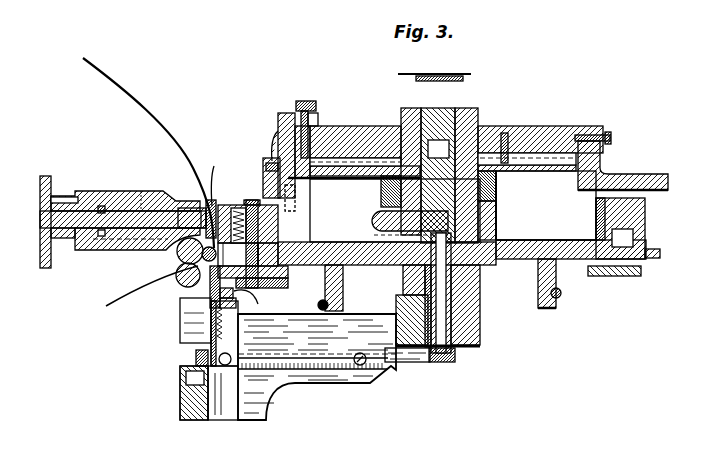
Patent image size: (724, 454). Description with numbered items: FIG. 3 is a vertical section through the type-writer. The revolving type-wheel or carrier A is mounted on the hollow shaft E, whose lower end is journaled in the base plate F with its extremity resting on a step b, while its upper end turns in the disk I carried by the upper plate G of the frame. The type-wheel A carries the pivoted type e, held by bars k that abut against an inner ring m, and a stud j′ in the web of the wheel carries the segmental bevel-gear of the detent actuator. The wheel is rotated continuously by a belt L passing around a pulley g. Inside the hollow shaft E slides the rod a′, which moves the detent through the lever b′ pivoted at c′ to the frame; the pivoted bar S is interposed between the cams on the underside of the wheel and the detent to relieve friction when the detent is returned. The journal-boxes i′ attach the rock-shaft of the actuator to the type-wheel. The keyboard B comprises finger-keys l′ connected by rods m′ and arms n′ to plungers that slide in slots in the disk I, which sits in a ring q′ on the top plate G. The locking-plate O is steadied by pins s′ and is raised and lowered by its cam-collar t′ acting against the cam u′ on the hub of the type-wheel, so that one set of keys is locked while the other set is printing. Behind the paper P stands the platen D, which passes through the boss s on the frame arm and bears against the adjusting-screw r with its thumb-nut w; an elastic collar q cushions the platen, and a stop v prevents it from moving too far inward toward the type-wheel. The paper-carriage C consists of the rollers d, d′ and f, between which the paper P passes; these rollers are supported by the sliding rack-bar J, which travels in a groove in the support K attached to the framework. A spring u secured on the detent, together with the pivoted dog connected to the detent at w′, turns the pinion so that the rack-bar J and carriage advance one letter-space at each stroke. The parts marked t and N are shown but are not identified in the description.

The paper P is at (148, 182).
The roller f is at (212, 193).
The thumb-nut w is at (56, 235).
The platen D is at (168, 203).
The stop v is at (58, 189).
The elastic collar q is at (93, 198).
The adjusting-screw r is at (57, 232).
The boss s is at (130, 257).
The paper-carriage C is at (167, 258).
The roller d is at (170, 247).
The roller d′ is at (170, 273).
The bar k is at (230, 197).
The stud j′ is at (244, 244).
The type-wheel A is at (462, 222).
The lug t is at (661, 251).
The inner ring m is at (270, 218).
The pivoted bar S is at (251, 300).
The journal-boxes i′ is at (195, 320).
The spring u is at (206, 320).
The rack-bar J is at (210, 351).
The support K is at (173, 390).
The end of dog w′ is at (194, 393).
The pivoted type e is at (223, 393).
The lever b′ is at (313, 346).
The pivot c′ is at (353, 345).
The keyboard B is at (354, 138).
The finger-keys l′ is at (305, 96).
The rods m′ is at (308, 115).
The arms n′ is at (266, 131).
The shaft E is at (439, 227).
The sliding rod a′ is at (427, 293).
The base plate F is at (466, 311).
The step b is at (476, 348).
The disk I is at (540, 135).
The pins s′ is at (515, 146).
The cam-collar t′ is at (495, 205).
The locking-plate O is at (546, 205).
The cam u′ is at (546, 222).
The ring q′ is at (595, 123).
The upper plate G is at (623, 165).
The pulley g is at (531, 277).
The belt L is at (551, 289).
The plate N is at (448, 76).